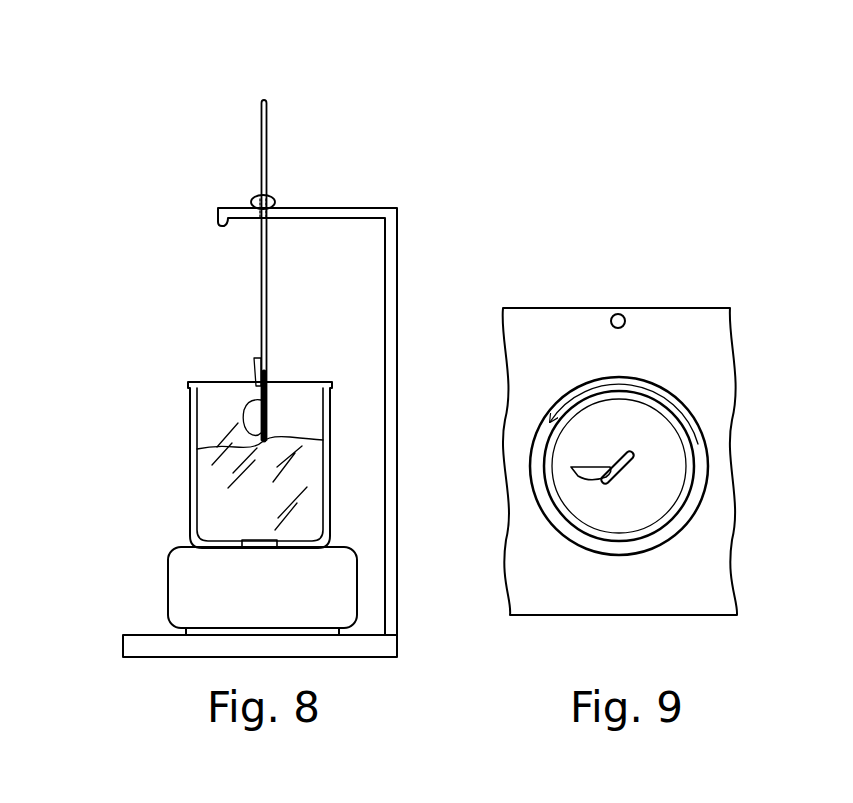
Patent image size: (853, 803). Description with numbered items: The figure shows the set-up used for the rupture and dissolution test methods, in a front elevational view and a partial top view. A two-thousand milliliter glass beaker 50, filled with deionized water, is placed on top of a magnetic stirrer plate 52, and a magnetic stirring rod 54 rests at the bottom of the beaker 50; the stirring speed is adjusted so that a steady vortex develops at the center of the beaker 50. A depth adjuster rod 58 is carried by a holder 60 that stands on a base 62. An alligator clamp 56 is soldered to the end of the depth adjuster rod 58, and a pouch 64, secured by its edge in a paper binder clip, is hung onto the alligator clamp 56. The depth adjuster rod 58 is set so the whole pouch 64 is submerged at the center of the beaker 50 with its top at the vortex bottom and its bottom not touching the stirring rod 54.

In FIG. 8, the glass beaker 50 is at (197, 436).
In FIG. 9, the glass beaker 50 is at (691, 456).
In FIG. 8, the magnetic stirrer plate 52 is at (272, 596).
In FIG. 9, the magnetic stirrer plate 52 is at (673, 364).
In FIG. 8, the magnetic stirring rod 54 is at (257, 540).
In FIG. 9, the magnetic stirring rod 54 is at (636, 466).
In FIG. 8, the alligator clamp 56 is at (266, 372).
In FIG. 8, the depth adjuster rod 58 is at (267, 150).
In FIG. 8, the holder 60 is at (408, 236).
In FIG. 8, the base 62 is at (127, 648).
In FIG. 8, the pouch 64 is at (243, 405).
In FIG. 9, the pouch 64 is at (591, 458).